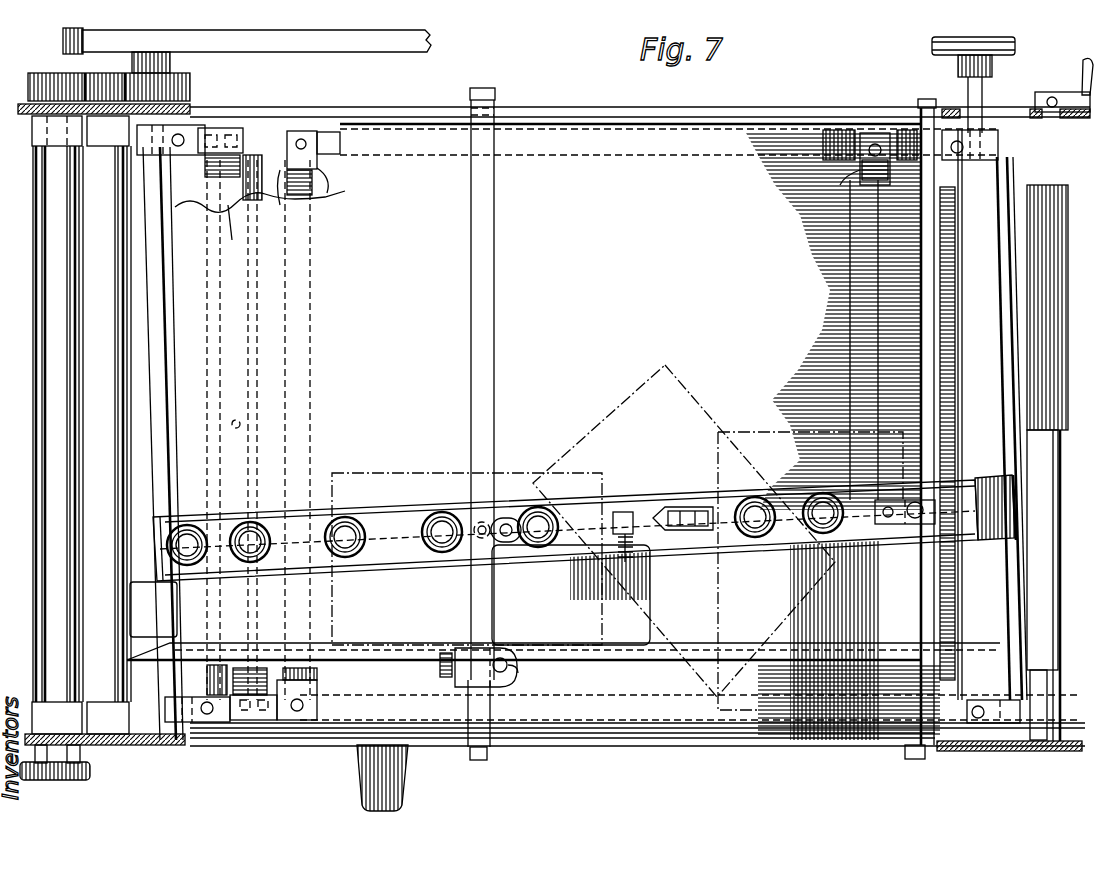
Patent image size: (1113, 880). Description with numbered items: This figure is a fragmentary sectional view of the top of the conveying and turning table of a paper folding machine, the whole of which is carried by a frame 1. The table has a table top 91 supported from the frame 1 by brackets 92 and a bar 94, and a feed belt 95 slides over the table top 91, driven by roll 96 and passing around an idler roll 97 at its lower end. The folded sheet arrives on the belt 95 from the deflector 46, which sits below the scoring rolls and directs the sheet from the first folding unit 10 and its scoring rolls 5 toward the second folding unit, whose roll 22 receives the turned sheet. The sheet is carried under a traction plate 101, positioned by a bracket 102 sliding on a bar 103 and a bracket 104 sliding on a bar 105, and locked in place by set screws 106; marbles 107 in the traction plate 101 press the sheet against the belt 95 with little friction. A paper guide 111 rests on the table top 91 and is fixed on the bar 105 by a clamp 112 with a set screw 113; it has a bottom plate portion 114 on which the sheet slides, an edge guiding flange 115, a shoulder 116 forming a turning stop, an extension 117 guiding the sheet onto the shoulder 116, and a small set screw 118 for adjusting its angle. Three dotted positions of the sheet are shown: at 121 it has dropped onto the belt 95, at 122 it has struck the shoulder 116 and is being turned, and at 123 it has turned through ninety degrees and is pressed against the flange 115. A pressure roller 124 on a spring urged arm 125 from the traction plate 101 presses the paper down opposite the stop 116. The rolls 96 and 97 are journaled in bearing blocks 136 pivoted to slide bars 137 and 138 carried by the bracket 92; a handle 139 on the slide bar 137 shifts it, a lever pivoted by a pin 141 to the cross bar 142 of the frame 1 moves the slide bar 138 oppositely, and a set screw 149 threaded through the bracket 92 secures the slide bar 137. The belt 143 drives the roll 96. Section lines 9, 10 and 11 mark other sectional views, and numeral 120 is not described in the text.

The frame 1 is at (640, 109).
The scoring rolls 5 is at (46, 256).
The section line 9 is at (266, 125).
The folding unit 10 is at (523, 125).
The section line 11 is at (758, 402).
The roll 22 is at (100, 230).
The deflector 46 is at (1047, 463).
The table top 91 is at (972, 395).
The brackets 92 is at (290, 160).
The bar 94 is at (310, 184).
The feed belt 95 is at (990, 485).
The roll 96 is at (1002, 178).
The idler roll 97 is at (158, 205).
The traction plate 101 is at (378, 516).
The bracket 102 is at (930, 526).
The bar 103 is at (902, 752).
The bracket 104 is at (504, 517).
The bar 105 is at (485, 355).
The set screws 106 is at (478, 522).
The marbles 107 is at (195, 540).
The paper guide 111 is at (617, 680).
The clamp 112 is at (495, 688).
The set screw 113 is at (440, 668).
The bottom plate portion 114 is at (538, 635).
The edge guiding flange 115 is at (395, 634).
The shoulder 116 is at (680, 648).
The extension 117 is at (777, 612).
The set screw 118 is at (523, 681).
The plate 120 is at (229, 222).
The sheet position 121 is at (772, 432).
The sheet position 122 is at (660, 380).
The sheet position 123 is at (350, 473).
The pressure roller 124 is at (666, 506).
The spring urged arm 125 is at (641, 551).
The bearing blocks 136 is at (150, 156).
The slide bar 137 is at (320, 722).
The slide bar 138 is at (212, 178).
The handle 139 is at (404, 795).
The pin 141 is at (232, 424).
The cross bar 142 is at (293, 207).
The belt 143 is at (932, 46).
The set screw 149 is at (307, 720).